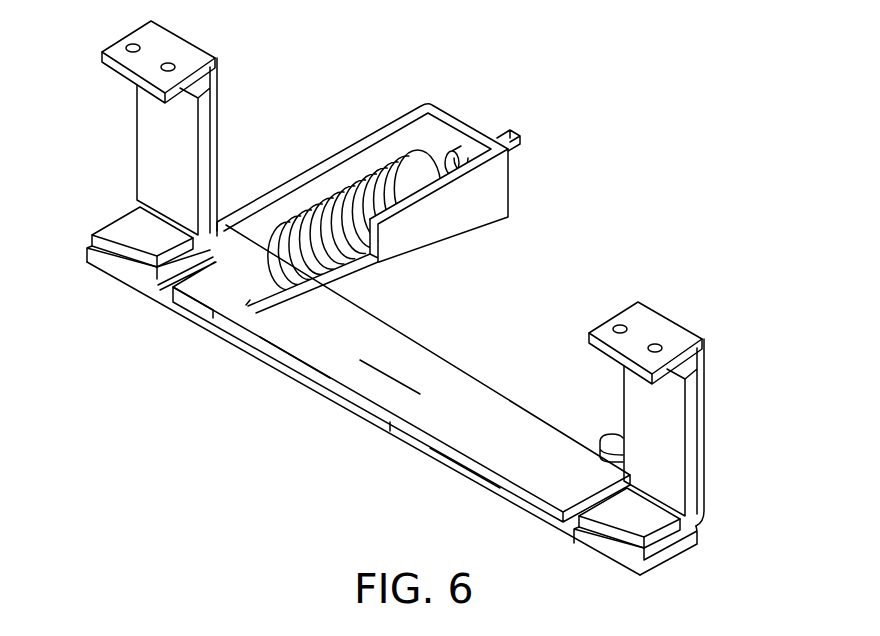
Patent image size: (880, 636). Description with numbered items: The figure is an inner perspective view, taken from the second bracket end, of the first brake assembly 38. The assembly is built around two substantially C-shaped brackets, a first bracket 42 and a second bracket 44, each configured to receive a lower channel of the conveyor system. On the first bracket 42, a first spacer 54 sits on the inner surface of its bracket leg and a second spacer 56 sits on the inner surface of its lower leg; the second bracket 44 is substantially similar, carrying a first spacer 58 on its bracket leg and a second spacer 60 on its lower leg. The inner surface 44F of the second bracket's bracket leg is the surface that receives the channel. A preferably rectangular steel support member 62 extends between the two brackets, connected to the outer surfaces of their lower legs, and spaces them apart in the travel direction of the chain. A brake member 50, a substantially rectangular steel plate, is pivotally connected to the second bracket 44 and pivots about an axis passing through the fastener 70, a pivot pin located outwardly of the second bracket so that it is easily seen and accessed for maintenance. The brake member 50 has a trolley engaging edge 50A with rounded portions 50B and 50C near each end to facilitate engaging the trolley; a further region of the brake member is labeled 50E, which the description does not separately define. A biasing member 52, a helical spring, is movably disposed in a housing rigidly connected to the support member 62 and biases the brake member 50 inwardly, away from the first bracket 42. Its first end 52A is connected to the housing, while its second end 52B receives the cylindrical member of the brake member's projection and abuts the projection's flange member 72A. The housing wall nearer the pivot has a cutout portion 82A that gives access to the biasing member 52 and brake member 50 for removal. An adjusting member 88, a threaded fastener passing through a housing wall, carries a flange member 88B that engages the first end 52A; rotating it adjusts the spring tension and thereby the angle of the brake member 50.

The first brake assembly 38 is at (227, 395).
The first bracket 42 is at (181, 34).
The second bracket 44 is at (664, 315).
The inner surface of bracket leg 44F is at (690, 360).
The brake member 50 is at (487, 381).
The trolley engaging edge 50A is at (305, 372).
The rounded portion 50B is at (468, 466).
The rounded portion 50C is at (192, 306).
The base plate top surface 50E is at (390, 372).
The biasing member 52 is at (345, 193).
The first end of biasing member 52A is at (430, 174).
The second end of biasing member 52B is at (318, 270).
The first spacer 54 is at (162, 137).
The second spacer 56 is at (138, 225).
The first spacer 58 is at (660, 438).
The second spacer 60 is at (640, 513).
The support member 62 is at (668, 556).
The fastener 70 is at (612, 445).
The flange member 72A is at (282, 242).
The cutout portion 82A is at (355, 266).
The adjusting member 88 is at (518, 142).
The flange member 88B is at (442, 145).